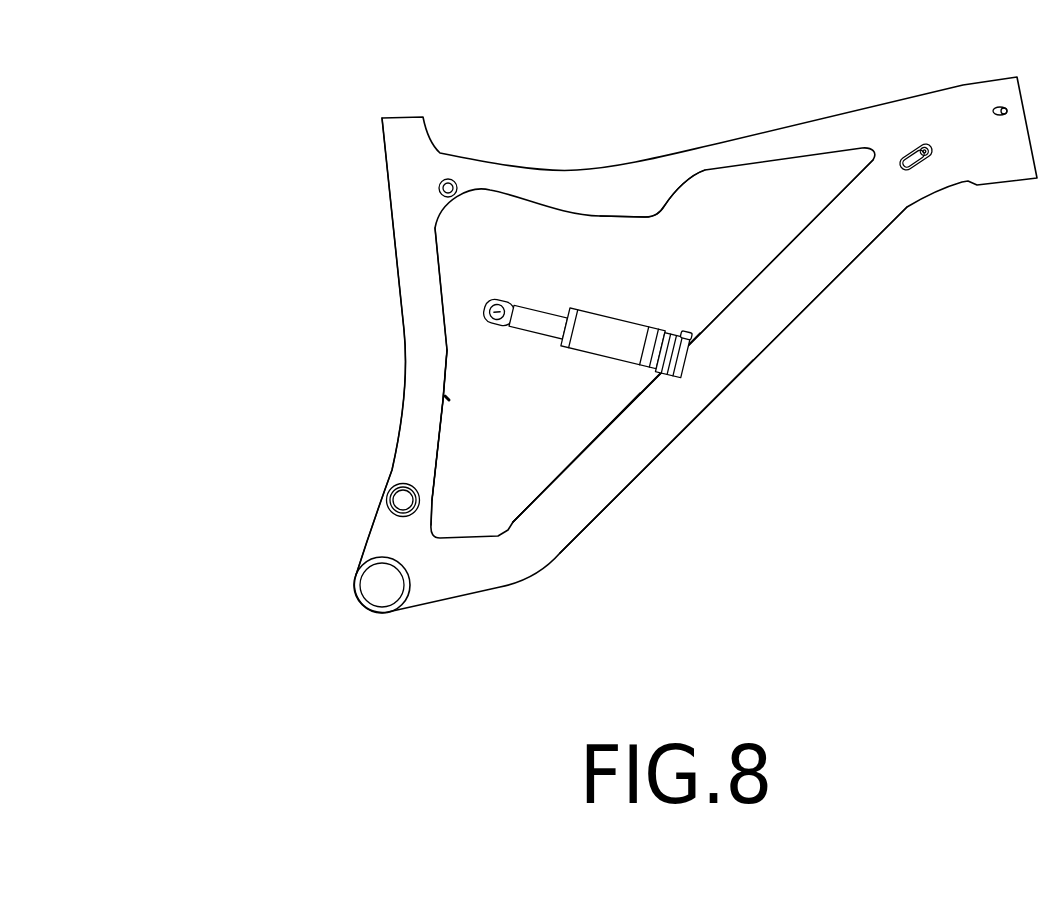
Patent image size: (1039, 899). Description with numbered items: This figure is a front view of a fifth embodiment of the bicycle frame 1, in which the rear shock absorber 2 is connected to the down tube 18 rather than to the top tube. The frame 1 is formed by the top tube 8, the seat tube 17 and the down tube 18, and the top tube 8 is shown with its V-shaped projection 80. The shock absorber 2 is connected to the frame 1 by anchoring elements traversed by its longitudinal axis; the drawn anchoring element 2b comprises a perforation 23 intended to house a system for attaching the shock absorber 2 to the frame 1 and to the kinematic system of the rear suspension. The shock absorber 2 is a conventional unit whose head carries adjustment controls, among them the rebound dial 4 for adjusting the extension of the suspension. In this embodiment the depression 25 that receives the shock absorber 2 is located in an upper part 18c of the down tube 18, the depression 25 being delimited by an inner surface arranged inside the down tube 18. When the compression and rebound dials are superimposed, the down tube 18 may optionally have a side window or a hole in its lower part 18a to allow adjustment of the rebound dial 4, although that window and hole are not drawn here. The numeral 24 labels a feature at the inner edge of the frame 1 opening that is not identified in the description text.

The frame 1 is at (275, 80).
The top tube 8 is at (710, 157).
The V-shaped projection 80 is at (653, 210).
The seat tube 17 is at (430, 342).
The down tube 18 is at (743, 327).
The lower part of the down tube 18a is at (630, 486).
The upper part of the down tube 18c is at (581, 448).
The inner edge of frame opening 24 is at (447, 400).
The rear shock absorber 2 is at (617, 332).
The anchoring element 2b is at (512, 303).
The perforation 23 is at (490, 306).
The rebound dial 4 is at (687, 334).
The depression 25 is at (680, 376).